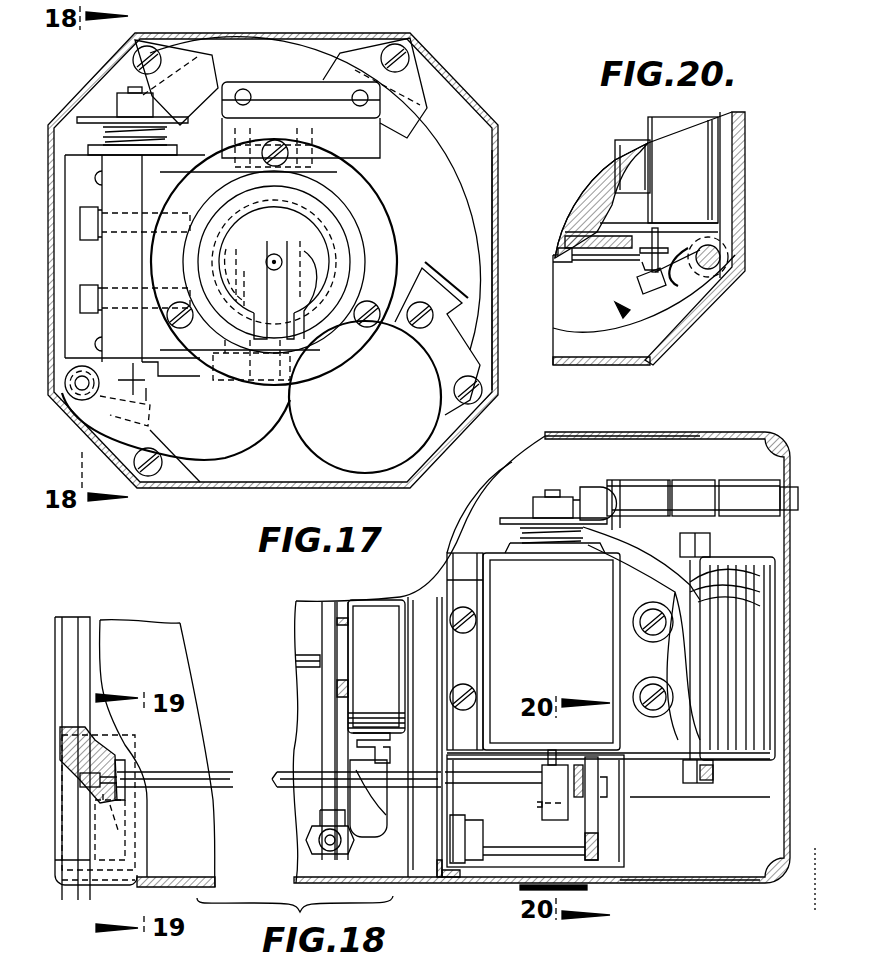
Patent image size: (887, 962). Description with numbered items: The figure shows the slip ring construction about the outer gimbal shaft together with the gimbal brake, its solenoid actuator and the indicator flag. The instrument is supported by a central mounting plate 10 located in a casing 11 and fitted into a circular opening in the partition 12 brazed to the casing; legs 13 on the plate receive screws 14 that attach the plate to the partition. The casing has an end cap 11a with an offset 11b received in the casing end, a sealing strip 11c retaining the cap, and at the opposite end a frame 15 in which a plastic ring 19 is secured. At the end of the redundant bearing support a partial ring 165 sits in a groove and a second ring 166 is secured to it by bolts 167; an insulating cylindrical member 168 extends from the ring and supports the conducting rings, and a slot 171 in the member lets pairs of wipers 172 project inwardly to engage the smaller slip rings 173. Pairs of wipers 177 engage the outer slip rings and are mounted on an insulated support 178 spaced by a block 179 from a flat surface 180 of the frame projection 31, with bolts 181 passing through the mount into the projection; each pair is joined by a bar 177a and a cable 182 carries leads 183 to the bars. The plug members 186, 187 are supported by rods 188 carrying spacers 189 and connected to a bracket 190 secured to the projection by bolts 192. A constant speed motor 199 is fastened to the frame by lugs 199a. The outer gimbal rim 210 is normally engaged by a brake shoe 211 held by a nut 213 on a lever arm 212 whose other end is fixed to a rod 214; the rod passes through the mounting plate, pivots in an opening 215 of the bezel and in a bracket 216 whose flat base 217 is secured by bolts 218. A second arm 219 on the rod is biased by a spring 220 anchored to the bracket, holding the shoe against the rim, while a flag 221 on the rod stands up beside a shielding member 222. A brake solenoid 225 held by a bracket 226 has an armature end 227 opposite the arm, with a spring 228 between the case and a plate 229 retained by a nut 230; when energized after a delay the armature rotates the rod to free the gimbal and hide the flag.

In FIG. 17, the central mounting plate 10 is at (280, 50).
In FIG. 18, the central mounting plate 10 is at (418, 862).
In FIG. 17, the casing 11 is at (490, 118).
In FIG. 18, the casing 11 is at (168, 878).
In FIG. 18, the end cap 11a is at (680, 883).
In FIG. 18, the offset 11b is at (615, 876).
In FIG. 18, the sealing strip 11c is at (580, 432).
In FIG. 17, the partition 12 is at (495, 148).
In FIG. 18, the partition 12 is at (444, 870).
In FIG. 17, the legs 13 is at (178, 55).
In FIG. 17, the screws 14 is at (130, 44).
In FIG. 18, the frame 15 is at (56, 882).
In FIG. 18, the plastic ring 19 is at (70, 733).
In FIG. 20, the frame projection 31 is at (622, 176).
In FIG. 18, the frame projection 31 is at (465, 579).
In FIG. 17, the partial ring 165 is at (266, 260).
In FIG. 18, the partial ring 165 is at (690, 784).
In FIG. 17, the second ring 166 is at (392, 252).
In FIG. 18, the second ring 166 is at (710, 780).
In FIG. 17, the bolts 167 is at (368, 301).
In FIG. 17, the insulating cylindrical member 168 is at (264, 206).
In FIG. 17, the slot 171 is at (295, 305).
In FIG. 17, the wipers 172 is at (304, 271).
In FIG. 17, the smaller slip rings 173 is at (242, 275).
In FIG. 17, the wipers 177 is at (210, 172).
In FIG. 18, the bar 177a is at (772, 660).
In FIG. 17, the insulated support 178 is at (108, 262).
In FIG. 18, the insulated support 178 is at (740, 750).
In FIG. 17, the block 179 is at (153, 318).
In FIG. 17, the flat surface 180 is at (222, 272).
In FIG. 17, the bolts 181 is at (90, 298).
In FIG. 18, the bolts 181 is at (654, 708).
In FIG. 18, the cable 182 is at (658, 562).
In FIG. 18, the leads 183 is at (718, 565).
In FIG. 17, the male plug member 186 is at (290, 82).
In FIG. 18, the male plug member 186 is at (700, 482).
In FIG. 18, the female plug member 187 is at (660, 482).
In FIG. 17, the rods 188 is at (243, 89).
In FIG. 18, the rods 188 is at (798, 486).
In FIG. 18, the spacers 189 is at (750, 482).
In FIG. 17, the bracket 190 is at (380, 140).
In FIG. 18, the bracket 190 is at (617, 482).
In FIG. 17, the bolts 192 is at (222, 130).
In FIG. 17, the constant speed motor 199 is at (365, 397).
In FIG. 17, the lugs 199a is at (438, 300).
In FIG. 18, the circular rim 210 is at (326, 738).
In FIG. 18, the brake shoe 211 is at (334, 846).
In FIG. 18, the lever arm 212 is at (380, 838).
In FIG. 18, the nut 213 is at (322, 850).
In FIG. 20, the rod 214 is at (728, 254).
In FIG. 18, the rod 214 is at (228, 785).
In FIG. 18, the opening 215 is at (82, 783).
In FIG. 17, the bracket 216 is at (85, 420).
In FIG. 20, the bracket 216 is at (624, 316).
In FIG. 18, the bracket 216 is at (600, 810).
In FIG. 20, the flat base 217 is at (621, 236).
In FIG. 18, the flat base 217 is at (483, 765).
In FIG. 17, the bolts 218 is at (236, 394).
In FIG. 20, the bolts 218 is at (566, 264).
In FIG. 20, the second arm 219 is at (673, 282).
In FIG. 18, the second arm 219 is at (545, 813).
In FIG. 18, the spring 220 is at (592, 778).
In FIG. 18, the flag 221 is at (116, 825).
In FIG. 18, the shielding member 222 is at (98, 812).
In FIG. 20, the brake solenoid 225 is at (712, 158).
In FIG. 18, the brake solenoid 225 is at (551, 646).
In FIG. 20, the bracket 226 is at (645, 183).
In FIG. 18, the bracket 226 is at (474, 651).
In FIG. 20, the armature end 227 is at (667, 250).
In FIG. 18, the armature end 227 is at (560, 752).
In FIG. 18, the spring 228 is at (565, 535).
In FIG. 18, the plate 229 is at (520, 520).
In FIG. 18, the nut 230 is at (563, 496).